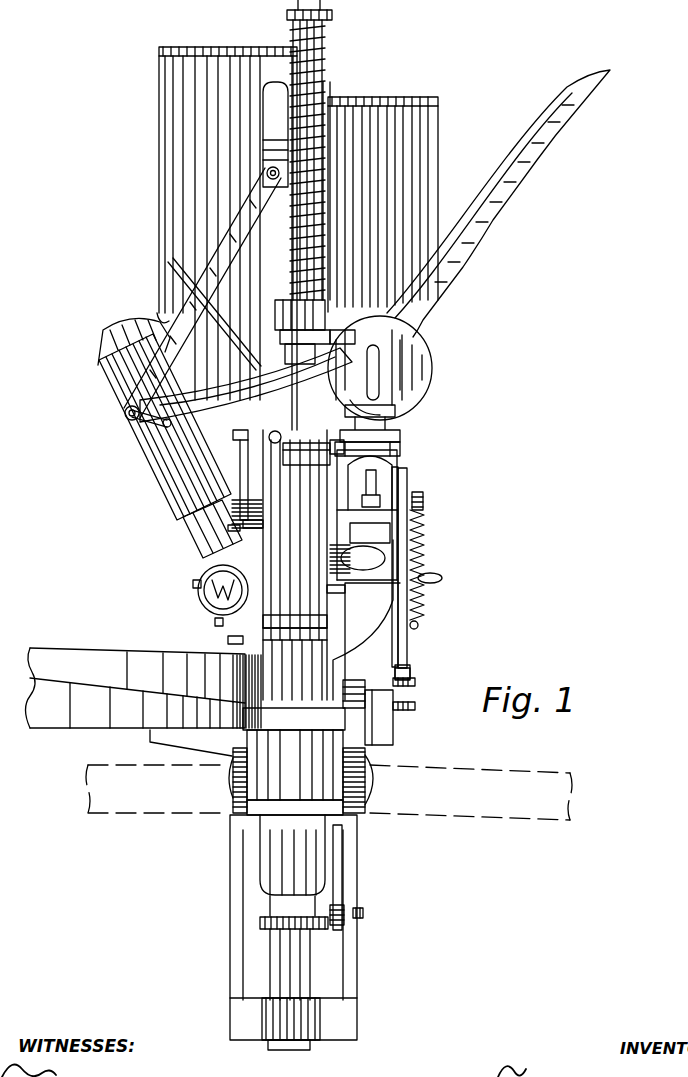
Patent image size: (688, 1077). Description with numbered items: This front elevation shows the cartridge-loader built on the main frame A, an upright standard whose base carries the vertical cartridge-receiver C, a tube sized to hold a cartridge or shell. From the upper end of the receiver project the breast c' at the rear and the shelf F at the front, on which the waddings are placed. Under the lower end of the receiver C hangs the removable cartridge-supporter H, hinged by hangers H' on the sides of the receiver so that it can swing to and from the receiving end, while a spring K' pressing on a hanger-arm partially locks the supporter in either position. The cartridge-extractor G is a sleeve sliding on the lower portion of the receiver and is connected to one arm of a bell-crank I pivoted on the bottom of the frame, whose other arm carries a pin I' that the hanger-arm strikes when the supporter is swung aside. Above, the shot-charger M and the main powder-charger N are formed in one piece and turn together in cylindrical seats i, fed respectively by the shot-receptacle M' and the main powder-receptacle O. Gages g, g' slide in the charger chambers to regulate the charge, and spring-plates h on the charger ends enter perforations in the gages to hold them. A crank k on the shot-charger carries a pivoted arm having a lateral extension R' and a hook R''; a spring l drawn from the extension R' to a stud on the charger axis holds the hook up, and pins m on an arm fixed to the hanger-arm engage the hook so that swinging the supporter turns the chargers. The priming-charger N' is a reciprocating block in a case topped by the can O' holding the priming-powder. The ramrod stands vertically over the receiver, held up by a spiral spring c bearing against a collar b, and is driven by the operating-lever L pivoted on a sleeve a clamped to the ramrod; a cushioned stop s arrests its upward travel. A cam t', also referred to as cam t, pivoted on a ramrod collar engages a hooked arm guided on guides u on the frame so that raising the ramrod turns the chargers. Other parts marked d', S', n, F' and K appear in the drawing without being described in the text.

The collar b is at (332, 15).
The spiral spring c is at (319, 160).
The main powder-receptacle O is at (227, 238).
The shot-receptacle M' is at (380, 197).
The operating-lever L is at (469, 245).
The cam t is at (294, 329).
The cam t' is at (345, 323).
The cushioned stop s is at (285, 330).
The can O' is at (225, 363).
The main powder-charger N is at (214, 599).
The priming-charger N' is at (239, 479).
The sleeve a is at (306, 448).
The breast c' is at (295, 565).
The shelf F is at (295, 635).
The guides u is at (232, 525).
The gage g is at (367, 515).
The gage g' is at (363, 551).
The pin d' is at (378, 425).
The cylindrical seats i is at (398, 462).
The main frame A is at (192, 762).
The shot-charger M is at (416, 567).
The lateral extension R' is at (421, 573).
The hook R'' is at (419, 667).
The spring-plates h is at (424, 500).
The spring l is at (424, 530).
The crank k is at (425, 552).
The spring K' is at (354, 693).
The bracket S' is at (380, 718).
The pins m is at (413, 682).
The screw n is at (411, 707).
The beam F' is at (186, 689).
The cartridge-receiver C is at (301, 772).
The hangers H' is at (296, 927).
The cartridge-extractor G is at (292, 865).
The cartridge-supporter H is at (294, 983).
The bell-crank I is at (351, 877).
The pin I' is at (367, 916).
The nut K is at (335, 932).